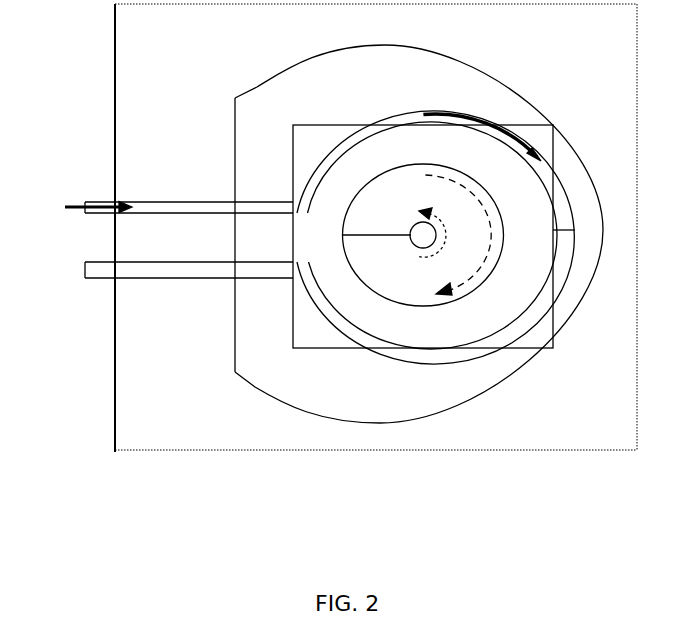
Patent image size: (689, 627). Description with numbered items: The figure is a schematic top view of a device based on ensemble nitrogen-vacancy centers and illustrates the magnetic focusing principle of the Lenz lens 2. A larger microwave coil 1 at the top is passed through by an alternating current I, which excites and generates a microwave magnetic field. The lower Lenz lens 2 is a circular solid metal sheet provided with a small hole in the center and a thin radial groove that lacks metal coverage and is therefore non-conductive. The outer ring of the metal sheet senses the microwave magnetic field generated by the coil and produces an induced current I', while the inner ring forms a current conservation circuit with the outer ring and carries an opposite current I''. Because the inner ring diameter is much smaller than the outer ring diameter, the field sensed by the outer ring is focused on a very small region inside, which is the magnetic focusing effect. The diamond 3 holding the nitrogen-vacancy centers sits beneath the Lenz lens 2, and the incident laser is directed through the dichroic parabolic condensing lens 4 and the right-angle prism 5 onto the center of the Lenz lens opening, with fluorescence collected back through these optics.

The microwave coil 1 is at (184, 209).
The Lenz lens 2 is at (385, 258).
The diamond 3 is at (312, 333).
The dichroic parabolic condensing lens 4 is at (303, 375).
The right-angle prism 5 is at (247, 431).
The alternating current I is at (482, 124).
The induced current I' is at (475, 235).
The opposite current I'' is at (416, 221).